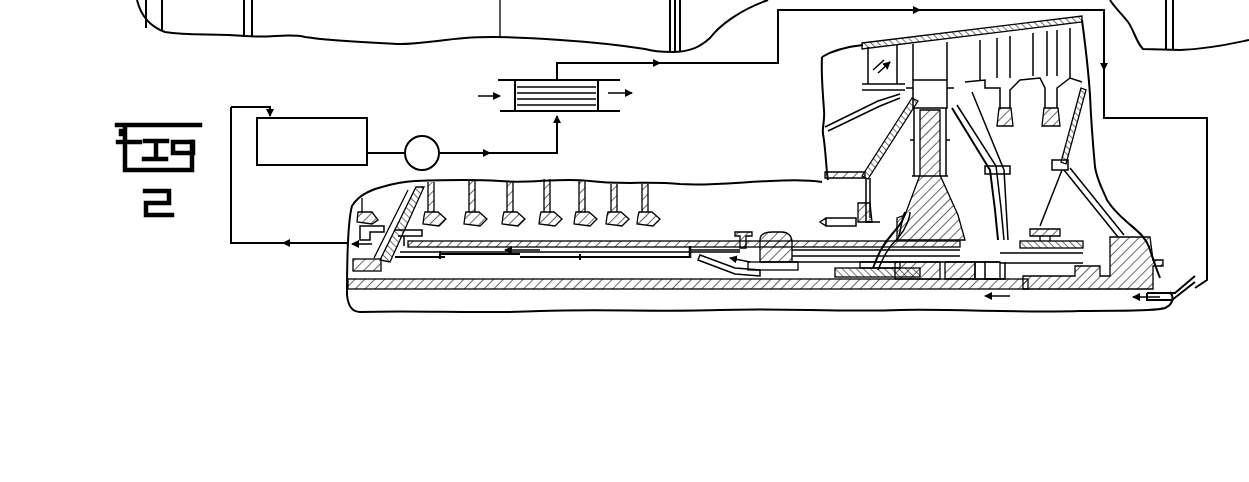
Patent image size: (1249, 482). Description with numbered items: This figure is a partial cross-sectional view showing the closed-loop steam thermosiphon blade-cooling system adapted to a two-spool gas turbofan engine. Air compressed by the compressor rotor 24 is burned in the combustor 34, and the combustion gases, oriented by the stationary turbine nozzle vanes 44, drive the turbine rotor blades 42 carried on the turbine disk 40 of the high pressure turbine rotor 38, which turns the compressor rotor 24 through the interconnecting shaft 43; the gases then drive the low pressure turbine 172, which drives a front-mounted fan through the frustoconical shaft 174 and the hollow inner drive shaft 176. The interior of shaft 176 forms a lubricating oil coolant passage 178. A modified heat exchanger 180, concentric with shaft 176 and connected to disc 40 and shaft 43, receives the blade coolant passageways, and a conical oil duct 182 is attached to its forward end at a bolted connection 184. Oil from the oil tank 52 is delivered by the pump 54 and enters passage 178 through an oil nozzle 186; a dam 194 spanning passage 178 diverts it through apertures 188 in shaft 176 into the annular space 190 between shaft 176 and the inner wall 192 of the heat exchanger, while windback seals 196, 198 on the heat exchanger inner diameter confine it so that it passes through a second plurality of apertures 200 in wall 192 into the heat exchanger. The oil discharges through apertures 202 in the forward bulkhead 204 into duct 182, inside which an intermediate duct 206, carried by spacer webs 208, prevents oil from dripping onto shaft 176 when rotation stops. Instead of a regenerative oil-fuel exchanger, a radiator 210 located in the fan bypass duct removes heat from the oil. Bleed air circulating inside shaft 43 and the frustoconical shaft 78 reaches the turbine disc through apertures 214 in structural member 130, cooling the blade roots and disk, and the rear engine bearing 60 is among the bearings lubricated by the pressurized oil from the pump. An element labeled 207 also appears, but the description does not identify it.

The rear engine bearing 60 is at (220, 3).
The oil tank 52 is at (358, 118).
The pump 54 is at (431, 141).
The radiator 210 is at (580, 112).
The combustor 34 is at (846, 71).
The turbine nozzle vanes 44 is at (883, 67).
The turbine rotor blades 42 is at (930, 67).
The turbine rotor 38 is at (938, 44).
The low pressure turbine 172 is at (1023, 108).
The interconnecting shaft 43 is at (838, 172).
The apertures 214 is at (865, 194).
The structural member 130 is at (858, 214).
The turbine disk 40 is at (942, 205).
The frustoconical shaft 78 is at (990, 186).
The frustoconical shaft 174 is at (1117, 224).
The compressor rotor 24 is at (557, 197).
The conical oil duct 182 is at (668, 240).
The bolted connection 184 is at (736, 232).
The forward bulkhead 204 is at (775, 236).
The heat exchanger 180 is at (794, 242).
The apertures 200 is at (937, 241).
The windback seal 198 is at (987, 269).
The shaft sleeve 207 is at (435, 258).
The intermediate duct 206 is at (483, 258).
The inner drive shaft 176 is at (688, 274).
The spacer webs 208 is at (580, 258).
The apertures 202 is at (722, 268).
The windback seal 196 is at (835, 277).
The annular space 190 is at (870, 277).
The inner wall 192 is at (905, 280).
The dam 194 is at (900, 292).
The apertures 188 is at (985, 282).
The lubricating oil passage 178 is at (1018, 297).
The oil nozzle 186 is at (1192, 292).